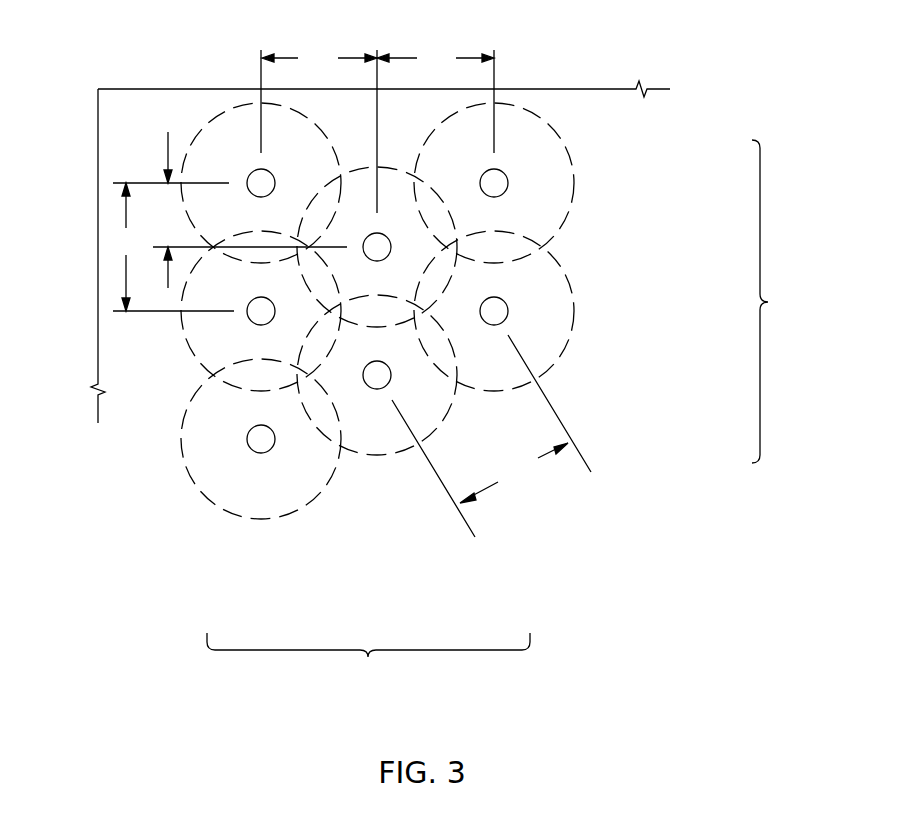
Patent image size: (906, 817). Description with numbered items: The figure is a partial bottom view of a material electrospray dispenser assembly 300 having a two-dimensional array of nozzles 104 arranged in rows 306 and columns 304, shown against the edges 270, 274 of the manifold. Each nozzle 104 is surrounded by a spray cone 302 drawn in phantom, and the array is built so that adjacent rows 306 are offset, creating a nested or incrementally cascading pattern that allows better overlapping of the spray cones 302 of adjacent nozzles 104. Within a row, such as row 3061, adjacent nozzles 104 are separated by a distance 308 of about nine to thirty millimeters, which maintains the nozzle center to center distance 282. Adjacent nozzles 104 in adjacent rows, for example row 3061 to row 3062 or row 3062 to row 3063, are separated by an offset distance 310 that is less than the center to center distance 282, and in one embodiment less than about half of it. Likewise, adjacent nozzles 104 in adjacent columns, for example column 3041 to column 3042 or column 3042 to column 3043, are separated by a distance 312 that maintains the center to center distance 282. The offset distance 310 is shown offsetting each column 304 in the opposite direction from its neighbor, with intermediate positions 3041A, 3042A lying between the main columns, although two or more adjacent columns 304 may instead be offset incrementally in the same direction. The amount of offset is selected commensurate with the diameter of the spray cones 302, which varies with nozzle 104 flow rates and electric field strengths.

The material electrospray dispenser assembly 300 is at (551, 78).
The edge 270 is at (138, 88).
The edge 274 is at (97, 193).
The spray cone 302 is at (238, 104).
The nozzle 104 is at (248, 177).
The column 304 is at (786, 301).
The first column 3041 is at (635, 186).
The column 3041A is at (635, 233).
The second column 3042 is at (637, 314).
The column 3042A is at (637, 378).
The third column 3043 is at (637, 444).
The row 306 is at (368, 660).
The first row 3061 is at (258, 550).
The second row 3062 is at (371, 550).
The third row 3063 is at (509, 549).
The distance 308 is at (168, 247).
The offset distance 310 is at (245, 210).
The distance 312 is at (377, 130).
The nozzle center to center distance 282 is at (491, 436).